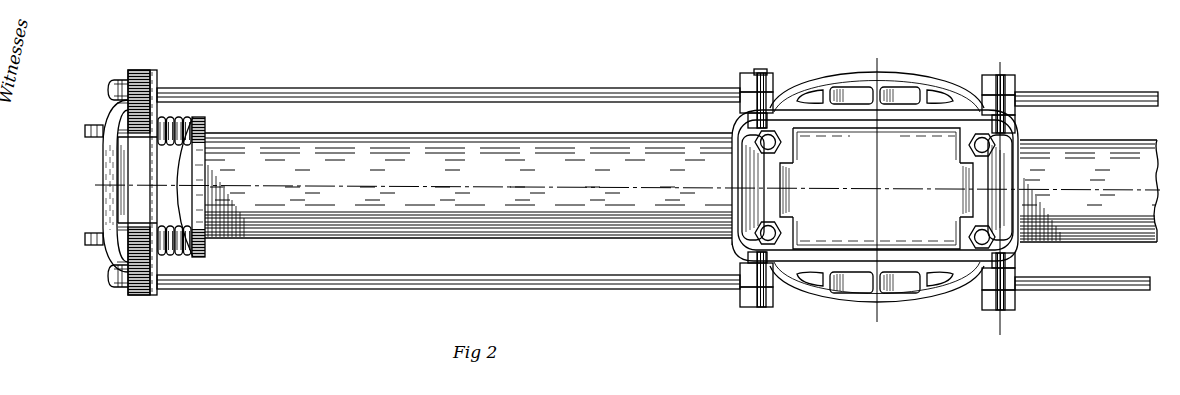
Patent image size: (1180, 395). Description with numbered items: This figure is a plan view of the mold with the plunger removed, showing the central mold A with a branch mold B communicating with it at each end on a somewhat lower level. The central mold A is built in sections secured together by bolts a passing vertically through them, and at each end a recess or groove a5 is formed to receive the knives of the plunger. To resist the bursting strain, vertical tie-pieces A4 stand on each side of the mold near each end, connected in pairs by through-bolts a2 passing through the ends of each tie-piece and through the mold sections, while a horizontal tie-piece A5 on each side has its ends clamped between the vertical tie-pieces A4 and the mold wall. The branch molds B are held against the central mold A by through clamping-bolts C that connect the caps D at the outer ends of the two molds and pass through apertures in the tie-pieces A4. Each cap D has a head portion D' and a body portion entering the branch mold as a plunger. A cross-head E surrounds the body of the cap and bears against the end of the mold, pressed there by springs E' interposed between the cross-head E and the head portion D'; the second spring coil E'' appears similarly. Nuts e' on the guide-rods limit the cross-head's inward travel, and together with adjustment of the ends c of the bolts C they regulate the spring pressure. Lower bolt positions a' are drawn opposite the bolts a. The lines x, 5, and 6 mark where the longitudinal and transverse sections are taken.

The central mold A is at (875, 185).
The vertical tie-piece A4 is at (746, 100).
The horizontal tie-piece A5 is at (905, 80).
The bolt a is at (861, 131).
The lower bolts a' is at (867, 244).
The through-bolt a2 is at (763, 78).
The recess or groove a5 is at (790, 172).
The branch mold B is at (681, 187).
The clamping-bolt C is at (657, 187).
The cap D is at (111, 186).
The head portion D' is at (142, 169).
The end of the bolt c is at (118, 84).
The nut e' is at (80, 183).
The cross-head E is at (218, 184).
The spring E' is at (195, 92).
The lower spring E'' is at (191, 278).
The section line x x is at (624, 188).
The section line 5 5 is at (877, 192).
The section line 6 6 is at (1001, 199).